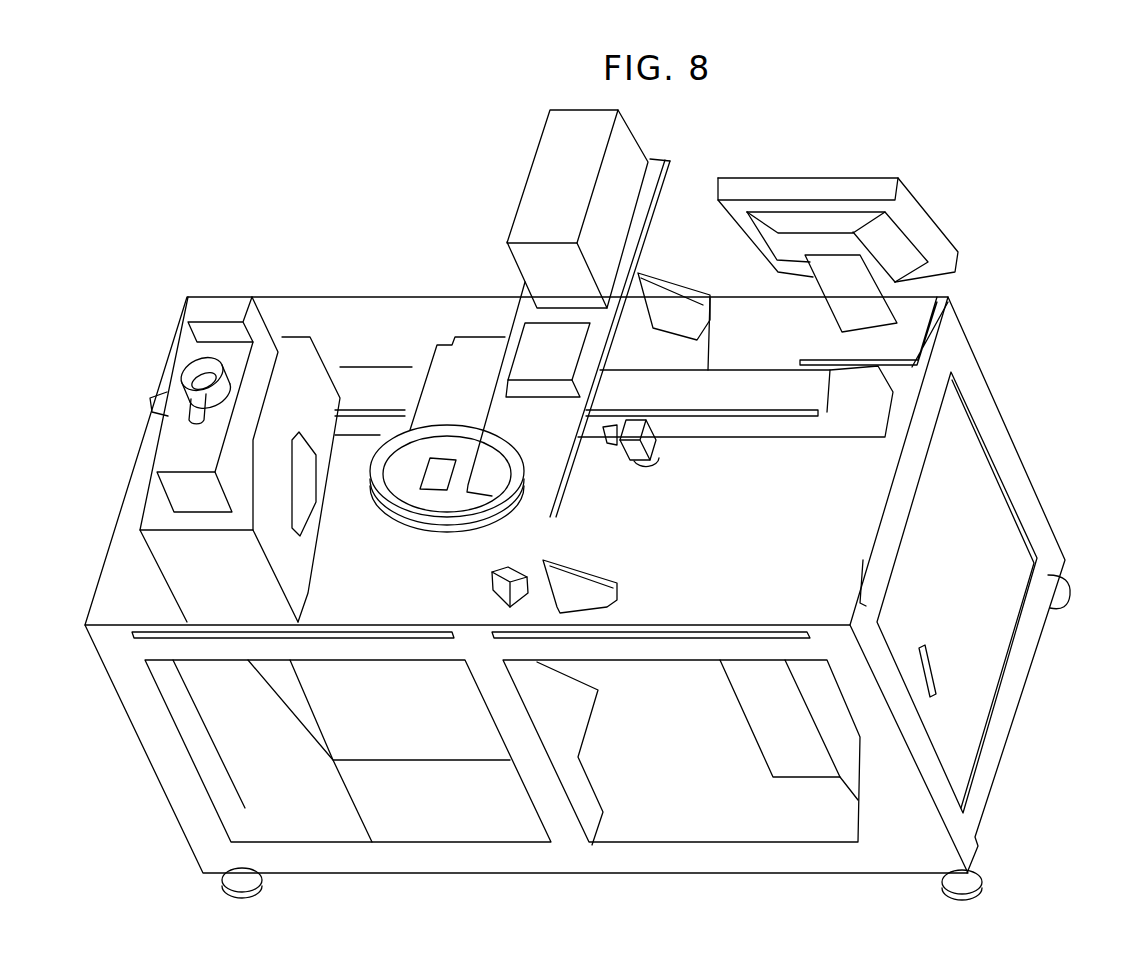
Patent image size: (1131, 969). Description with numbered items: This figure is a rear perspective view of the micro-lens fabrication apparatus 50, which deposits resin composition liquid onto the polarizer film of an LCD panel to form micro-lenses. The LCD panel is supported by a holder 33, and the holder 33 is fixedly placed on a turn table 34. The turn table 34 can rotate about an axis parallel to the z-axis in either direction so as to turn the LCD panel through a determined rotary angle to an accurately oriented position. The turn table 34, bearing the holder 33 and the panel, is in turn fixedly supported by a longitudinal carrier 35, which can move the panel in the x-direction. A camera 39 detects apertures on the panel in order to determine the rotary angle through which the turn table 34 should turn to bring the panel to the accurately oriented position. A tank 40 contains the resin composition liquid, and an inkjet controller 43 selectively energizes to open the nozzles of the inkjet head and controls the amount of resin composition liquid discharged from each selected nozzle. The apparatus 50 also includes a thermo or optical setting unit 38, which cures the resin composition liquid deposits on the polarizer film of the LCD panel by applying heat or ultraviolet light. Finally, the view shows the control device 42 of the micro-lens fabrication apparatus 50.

The micro-lens fabrication apparatus 50 is at (349, 245).
The holder 33 is at (432, 484).
The turn table 34 is at (365, 482).
The longitudinal carrier 35 is at (746, 398).
The thermo or optical setting unit 38 is at (180, 453).
The camera 39 is at (646, 472).
The tank 40 is at (548, 152).
The control device 42 is at (993, 537).
The inkjet controller 43 is at (533, 345).